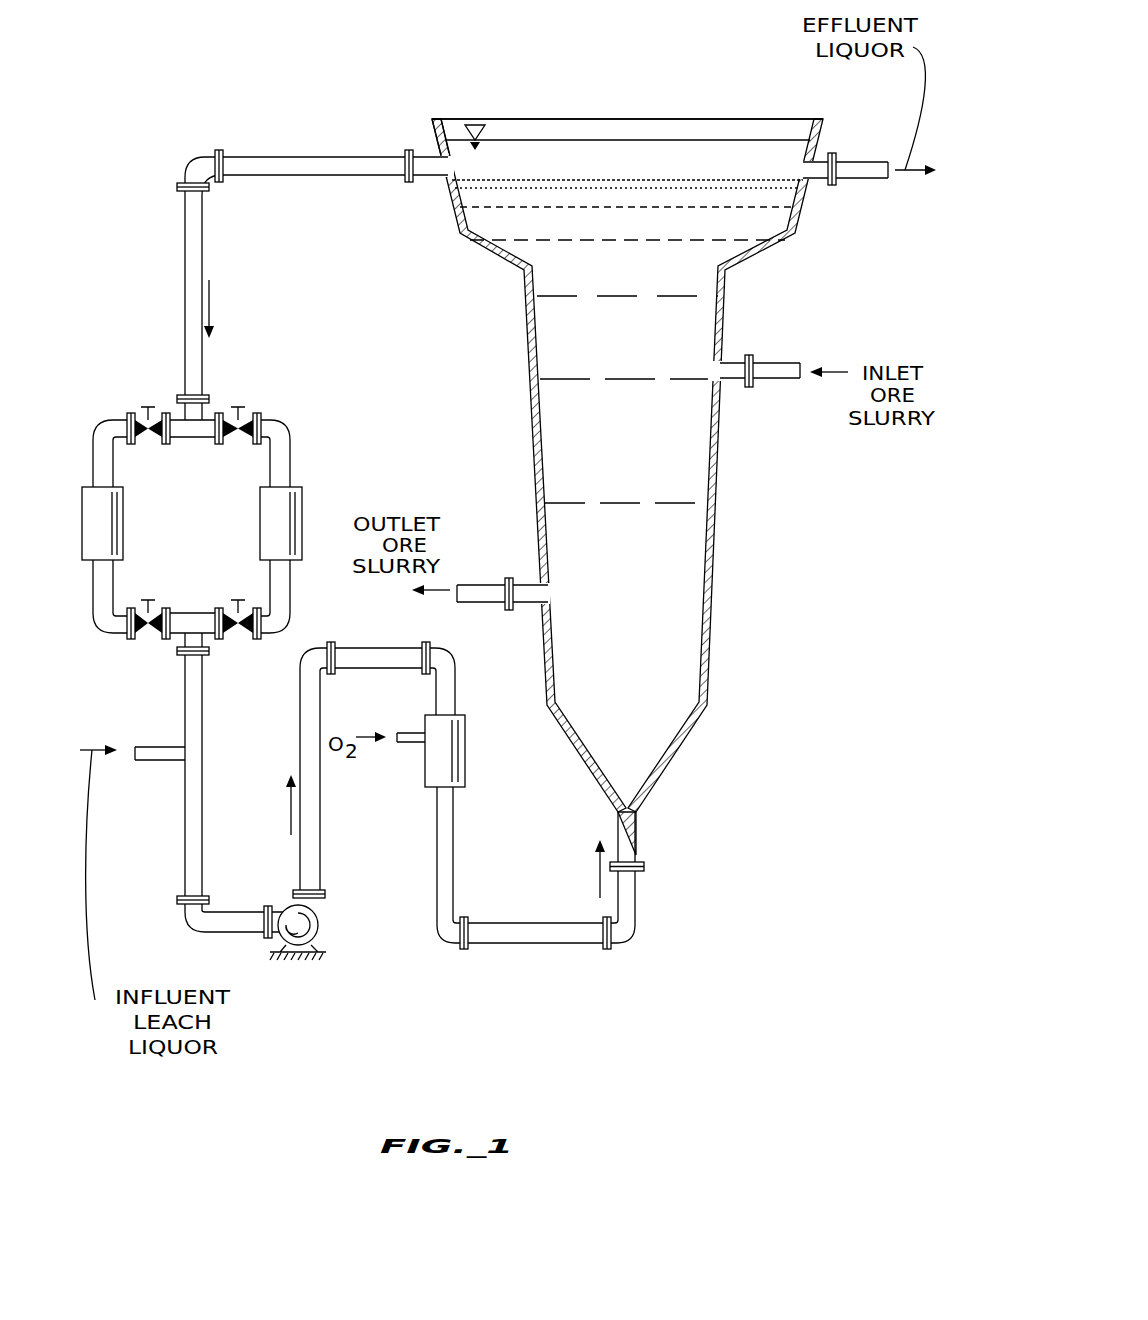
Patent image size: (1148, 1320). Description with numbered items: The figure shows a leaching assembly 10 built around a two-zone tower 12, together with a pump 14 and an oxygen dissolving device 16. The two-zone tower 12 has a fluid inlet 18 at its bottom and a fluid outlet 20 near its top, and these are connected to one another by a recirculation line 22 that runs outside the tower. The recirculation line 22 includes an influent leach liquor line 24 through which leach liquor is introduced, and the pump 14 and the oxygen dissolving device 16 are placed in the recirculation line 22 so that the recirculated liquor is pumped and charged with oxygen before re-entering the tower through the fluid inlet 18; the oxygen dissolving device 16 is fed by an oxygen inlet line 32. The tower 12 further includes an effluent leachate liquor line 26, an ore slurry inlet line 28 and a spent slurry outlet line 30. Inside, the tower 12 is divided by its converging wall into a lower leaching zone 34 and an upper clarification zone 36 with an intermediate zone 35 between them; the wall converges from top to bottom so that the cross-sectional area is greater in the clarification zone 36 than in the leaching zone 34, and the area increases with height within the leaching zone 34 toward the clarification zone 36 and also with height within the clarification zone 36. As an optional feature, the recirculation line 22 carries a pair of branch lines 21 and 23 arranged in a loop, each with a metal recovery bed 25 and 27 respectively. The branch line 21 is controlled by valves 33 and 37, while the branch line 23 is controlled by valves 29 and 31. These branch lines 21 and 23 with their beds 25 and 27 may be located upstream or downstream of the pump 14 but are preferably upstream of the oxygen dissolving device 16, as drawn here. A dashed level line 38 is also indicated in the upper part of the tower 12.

The leaching assembly 10 is at (755, 824).
The two-zone tower 12 is at (718, 553).
The pump 14 is at (318, 934).
The oxygen dissolving device 16 is at (455, 758).
The fluid inlet 18 is at (637, 830).
The fluid outlet 20 is at (435, 158).
The branch line 21 is at (115, 462).
The recirculation line 22 is at (184, 280).
The branch line 23 is at (290, 468).
The influent leach liquor line 24 is at (160, 745).
The metal recovery bed 25 is at (123, 522).
The effluent leachate liquor line 26 is at (856, 160).
The metal recovery bed 27 is at (302, 550).
The ore slurry inlet line 28 is at (783, 362).
The valve 29 is at (248, 420).
The spent slurry outlet line 30 is at (478, 585).
The valve 31 is at (245, 636).
The oxygen inlet line 32 is at (412, 733).
The valve 33 is at (135, 420).
The lower leaching zone 34 is at (697, 480).
The intermediate zone 35 is at (735, 247).
The upper clarification zone 36 is at (777, 198).
The valve 37 is at (137, 637).
The vessel wall section 38 is at (728, 310).